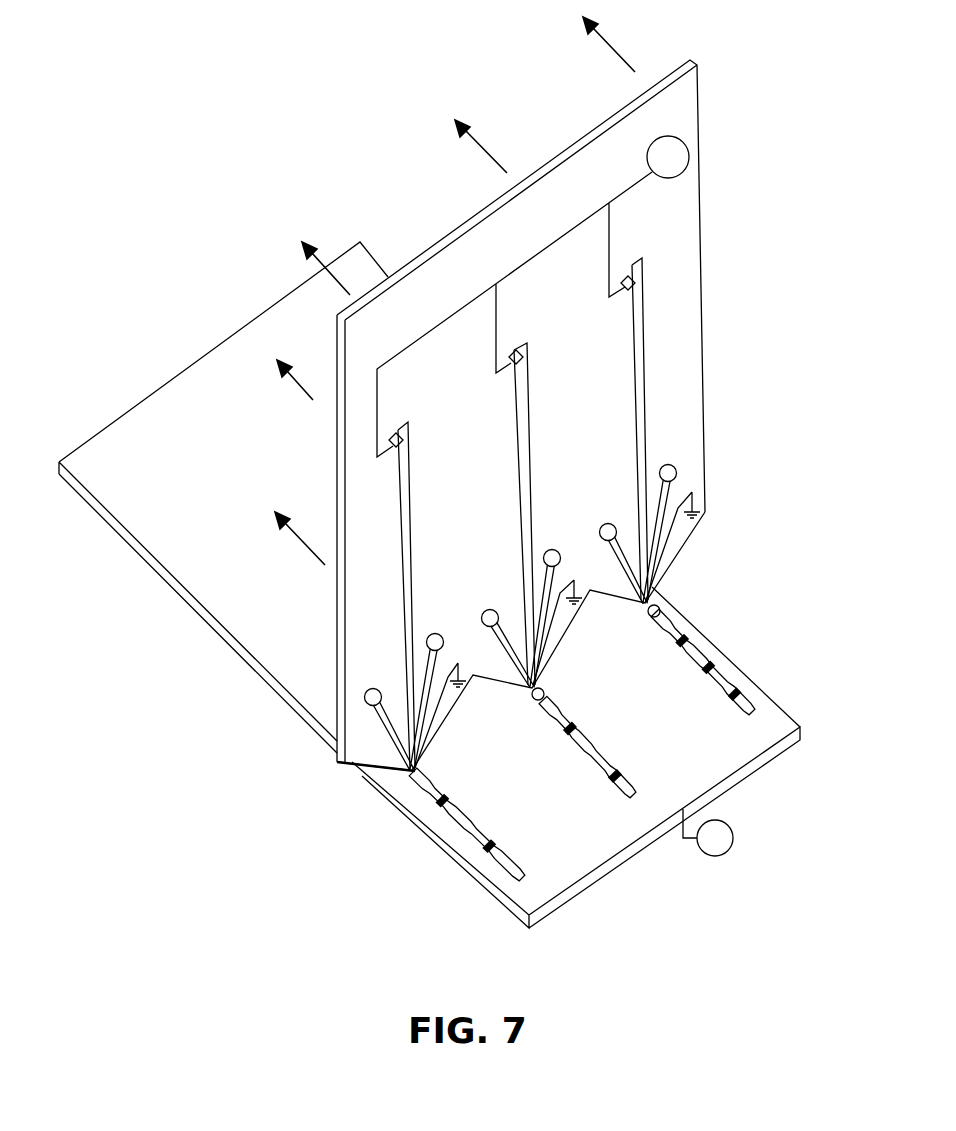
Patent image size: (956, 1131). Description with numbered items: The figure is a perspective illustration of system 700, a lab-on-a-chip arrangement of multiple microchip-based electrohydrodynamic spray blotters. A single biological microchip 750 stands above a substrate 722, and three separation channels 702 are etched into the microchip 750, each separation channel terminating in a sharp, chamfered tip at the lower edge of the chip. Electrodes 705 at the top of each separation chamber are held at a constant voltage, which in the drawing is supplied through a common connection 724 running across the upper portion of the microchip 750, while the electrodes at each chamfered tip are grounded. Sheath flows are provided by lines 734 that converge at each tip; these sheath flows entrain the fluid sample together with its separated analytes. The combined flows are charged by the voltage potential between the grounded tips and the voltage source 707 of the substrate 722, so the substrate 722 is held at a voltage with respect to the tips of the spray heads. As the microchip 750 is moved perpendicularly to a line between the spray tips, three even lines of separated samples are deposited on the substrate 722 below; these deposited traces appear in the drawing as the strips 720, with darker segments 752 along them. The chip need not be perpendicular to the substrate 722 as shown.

The system 700 is at (346, 104).
The biological microchip 750 is at (586, 135).
The voltage source bus 724 is at (686, 138).
The electrodes 705 is at (510, 355).
The separation channels 702 is at (410, 480).
The lines 734 is at (488, 609).
The substrate 722 is at (108, 511).
The sample channels 720 is at (470, 817).
The channel constrictions 752 is at (497, 847).
The voltage source 707 is at (726, 855).